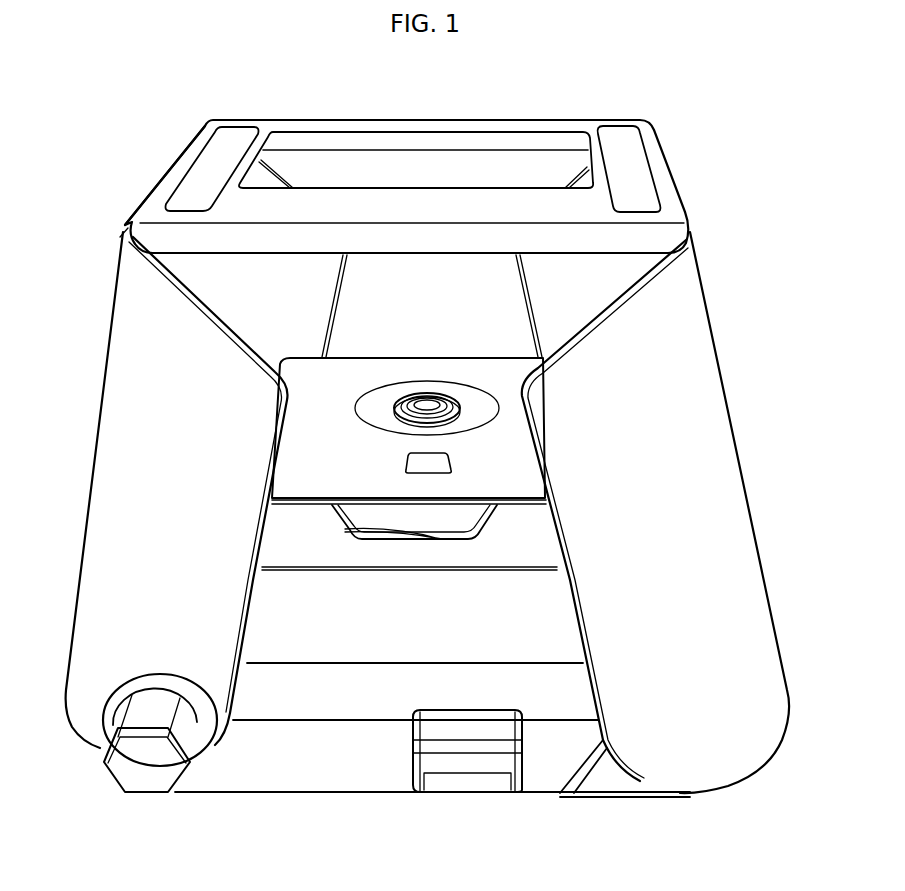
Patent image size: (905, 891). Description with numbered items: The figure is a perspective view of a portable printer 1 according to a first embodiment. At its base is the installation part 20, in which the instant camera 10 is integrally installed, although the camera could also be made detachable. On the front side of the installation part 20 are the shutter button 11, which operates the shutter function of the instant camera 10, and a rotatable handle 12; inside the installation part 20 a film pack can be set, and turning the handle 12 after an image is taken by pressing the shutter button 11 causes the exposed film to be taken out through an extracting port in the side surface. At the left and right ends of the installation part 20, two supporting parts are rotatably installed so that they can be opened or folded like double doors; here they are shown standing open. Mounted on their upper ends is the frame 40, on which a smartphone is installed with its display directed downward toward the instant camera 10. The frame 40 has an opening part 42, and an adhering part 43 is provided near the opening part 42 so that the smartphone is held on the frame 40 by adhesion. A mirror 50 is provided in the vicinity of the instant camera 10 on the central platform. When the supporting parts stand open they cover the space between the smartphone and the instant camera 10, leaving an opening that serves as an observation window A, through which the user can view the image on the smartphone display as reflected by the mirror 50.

The portable printer 1 is at (181, 133).
The instant camera 10 is at (412, 397).
The shutter button 11 is at (483, 765).
The handle 12 is at (150, 773).
The installation part 20 is at (361, 613).
The frame 40 is at (448, 120).
The opening part 42 is at (347, 171).
The adhering part 43 is at (236, 140).
The mirror 50 is at (432, 462).
The observation window A is at (477, 460).